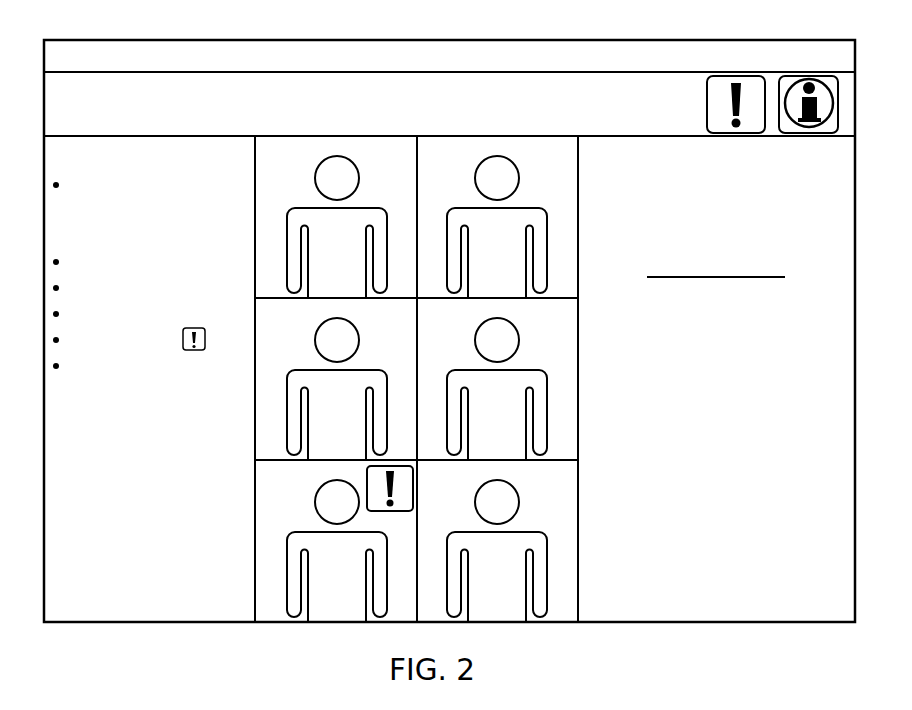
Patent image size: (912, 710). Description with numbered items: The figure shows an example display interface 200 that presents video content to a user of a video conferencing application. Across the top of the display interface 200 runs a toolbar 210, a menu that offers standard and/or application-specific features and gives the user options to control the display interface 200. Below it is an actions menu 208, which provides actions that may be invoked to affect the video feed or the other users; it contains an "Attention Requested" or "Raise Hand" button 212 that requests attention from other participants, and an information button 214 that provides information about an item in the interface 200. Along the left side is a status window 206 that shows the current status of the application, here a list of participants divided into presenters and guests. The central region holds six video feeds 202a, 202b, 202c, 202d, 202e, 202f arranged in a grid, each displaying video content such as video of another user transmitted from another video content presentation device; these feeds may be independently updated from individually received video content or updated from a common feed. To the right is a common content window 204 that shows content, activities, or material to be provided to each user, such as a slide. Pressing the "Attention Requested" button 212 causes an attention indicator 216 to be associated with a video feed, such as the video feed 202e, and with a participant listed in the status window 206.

The display interface 200 is at (108, 40).
The toolbar 210 is at (330, 52).
The actions menu 208 is at (700, 84).
The "Attention Requested" button 212 is at (725, 82).
The information button 214 is at (798, 82).
The status window 206 is at (222, 146).
The common content window 204 is at (700, 155).
The video feed 202a is at (377, 147).
The video feed 202b is at (521, 147).
The video feed 202c is at (263, 418).
The video feed 202d is at (573, 388).
The video feed 202e is at (263, 522).
The video feed 202f is at (573, 535).
The attention indicator 216 is at (197, 352).